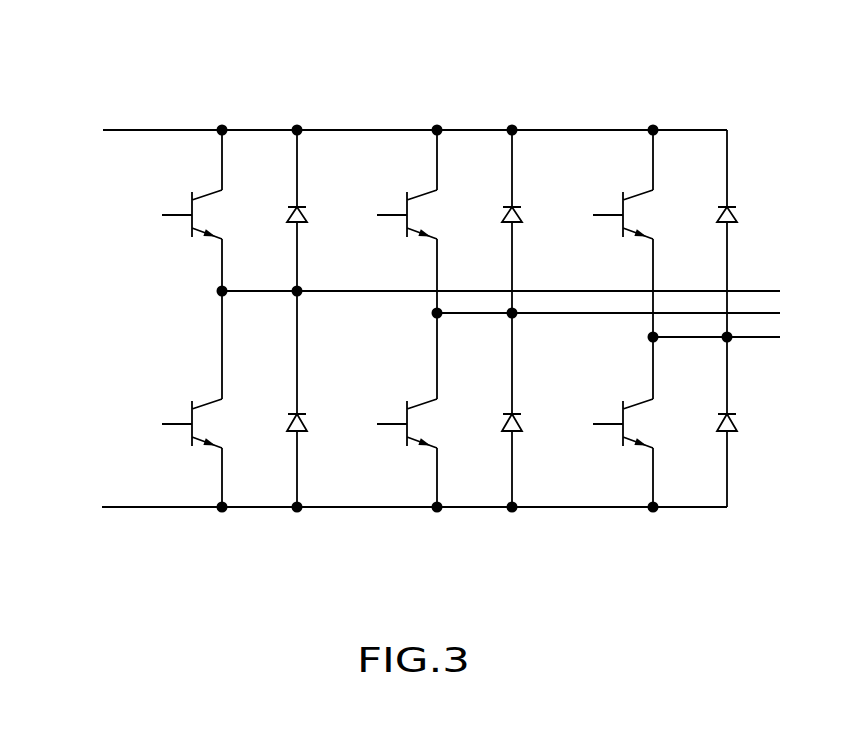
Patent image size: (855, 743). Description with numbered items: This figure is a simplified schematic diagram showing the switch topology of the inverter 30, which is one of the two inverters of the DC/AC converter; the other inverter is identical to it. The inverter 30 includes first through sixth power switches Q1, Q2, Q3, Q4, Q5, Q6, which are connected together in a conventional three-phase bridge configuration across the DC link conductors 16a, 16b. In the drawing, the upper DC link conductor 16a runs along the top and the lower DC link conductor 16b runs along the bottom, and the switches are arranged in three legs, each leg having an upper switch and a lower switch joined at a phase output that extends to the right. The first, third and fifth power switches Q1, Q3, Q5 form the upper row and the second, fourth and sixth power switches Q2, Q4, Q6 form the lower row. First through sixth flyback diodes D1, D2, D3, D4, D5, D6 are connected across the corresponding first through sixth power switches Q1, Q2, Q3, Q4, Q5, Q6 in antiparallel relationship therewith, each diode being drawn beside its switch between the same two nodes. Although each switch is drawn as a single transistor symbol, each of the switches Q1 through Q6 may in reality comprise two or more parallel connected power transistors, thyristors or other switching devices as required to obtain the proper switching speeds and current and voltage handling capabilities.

The DC link conductor 16a is at (125, 129).
The DC link conductor 16b is at (128, 508).
The first inverter 30 is at (412, 78).
The first power switch Q1 is at (213, 190).
The second power switch Q2 is at (213, 399).
The third power switch Q3 is at (430, 190).
The fourth power switch Q4 is at (430, 399).
The fifth power switch Q5 is at (645, 190).
The sixth power switch Q6 is at (645, 399).
The first flyback diode D1 is at (287, 217).
The second flyback diode D2 is at (287, 426).
The third flyback diode D3 is at (500, 217).
The fourth flyback diode D4 is at (500, 426).
The fifth flyback diode D5 is at (717, 217).
The sixth flyback diode D6 is at (717, 426).